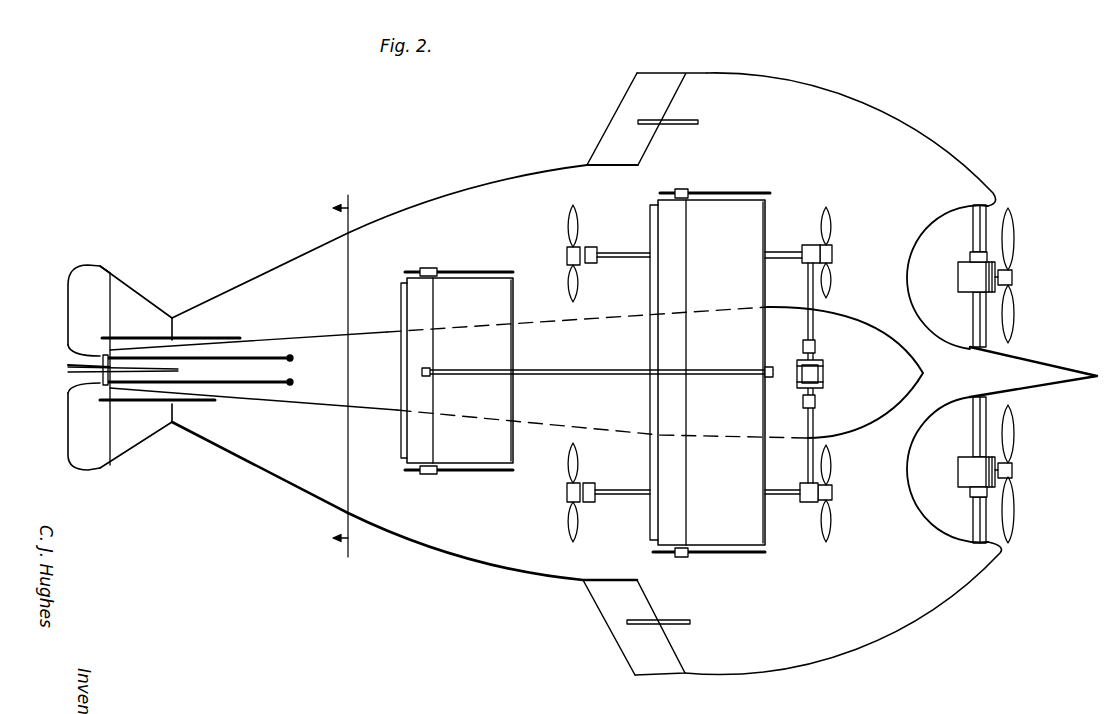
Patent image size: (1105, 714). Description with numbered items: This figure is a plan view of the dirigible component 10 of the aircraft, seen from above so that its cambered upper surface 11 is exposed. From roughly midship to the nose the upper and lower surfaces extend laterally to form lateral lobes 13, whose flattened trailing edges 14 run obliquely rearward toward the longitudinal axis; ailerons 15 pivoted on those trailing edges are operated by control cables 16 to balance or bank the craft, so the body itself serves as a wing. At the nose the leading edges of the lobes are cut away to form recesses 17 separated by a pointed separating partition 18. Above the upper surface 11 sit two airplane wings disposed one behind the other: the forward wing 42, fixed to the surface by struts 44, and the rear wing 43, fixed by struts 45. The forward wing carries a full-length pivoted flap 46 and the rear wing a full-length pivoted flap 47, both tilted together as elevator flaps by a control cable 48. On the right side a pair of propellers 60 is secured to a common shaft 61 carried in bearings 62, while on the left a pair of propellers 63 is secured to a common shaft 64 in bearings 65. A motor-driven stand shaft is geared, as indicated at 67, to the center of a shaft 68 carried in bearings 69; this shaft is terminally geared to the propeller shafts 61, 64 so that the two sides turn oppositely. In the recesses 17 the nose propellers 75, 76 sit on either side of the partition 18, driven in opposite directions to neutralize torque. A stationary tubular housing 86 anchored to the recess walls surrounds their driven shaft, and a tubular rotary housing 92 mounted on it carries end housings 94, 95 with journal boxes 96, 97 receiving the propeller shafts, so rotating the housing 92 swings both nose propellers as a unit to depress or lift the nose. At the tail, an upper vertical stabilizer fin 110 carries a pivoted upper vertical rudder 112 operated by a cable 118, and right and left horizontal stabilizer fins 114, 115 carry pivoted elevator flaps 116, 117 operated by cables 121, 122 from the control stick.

The dirigible component 10 is at (357, 374).
The cambered upper surface 11 is at (505, 205).
The lateral lobes 13 is at (822, 102).
The trailing edges 14 is at (672, 102).
The ailerons 15 is at (630, 97).
The control cables 16 is at (678, 124).
The recesses 17 is at (918, 233).
The separating partition 18 is at (1027, 367).
The forward airplane wing 42 is at (755, 228).
The rear airplane wing 43 is at (507, 300).
The struts 44 is at (718, 192).
The struts 45 is at (472, 270).
The pivoted flap 46 is at (680, 275).
The pivoted flap 47 is at (410, 305).
The control cable 48 is at (584, 370).
The propellers 60 is at (572, 538).
The common shaft 61 is at (785, 495).
The bearings 62 is at (592, 483).
The propellers 63 is at (572, 215).
The common shaft 64 is at (628, 252).
The bearings 65 is at (592, 247).
The gearing 67 is at (822, 372).
The shaft 68 is at (820, 420).
The bearings 69 is at (817, 348).
The nose propeller 75 is at (1013, 518).
The nose propeller 76 is at (1013, 226).
The stationary tubular housing 86 is at (980, 233).
The tubular rotary housing 92 is at (973, 315).
The housing 94 is at (958, 472).
The housing 95 is at (958, 272).
The journal box 96 is at (1012, 465).
The journal box 97 is at (1008, 272).
The upper vertical stabilizer fin 110 is at (165, 370).
The upper vertical rudder 112 is at (75, 367).
The right horizontal stabilizer fin 114 is at (140, 438).
The left horizontal stabilizer fin 115 is at (142, 303).
The right horizontal elevator flap 116 is at (100, 467).
The left horizontal elevator flap 117 is at (92, 275).
The cable 118 is at (282, 380).
The cable 121 is at (200, 337).
The cable 122 is at (213, 402).